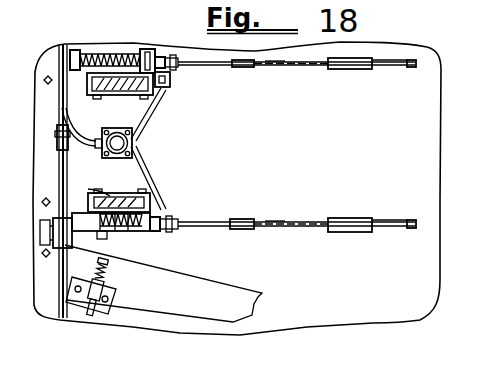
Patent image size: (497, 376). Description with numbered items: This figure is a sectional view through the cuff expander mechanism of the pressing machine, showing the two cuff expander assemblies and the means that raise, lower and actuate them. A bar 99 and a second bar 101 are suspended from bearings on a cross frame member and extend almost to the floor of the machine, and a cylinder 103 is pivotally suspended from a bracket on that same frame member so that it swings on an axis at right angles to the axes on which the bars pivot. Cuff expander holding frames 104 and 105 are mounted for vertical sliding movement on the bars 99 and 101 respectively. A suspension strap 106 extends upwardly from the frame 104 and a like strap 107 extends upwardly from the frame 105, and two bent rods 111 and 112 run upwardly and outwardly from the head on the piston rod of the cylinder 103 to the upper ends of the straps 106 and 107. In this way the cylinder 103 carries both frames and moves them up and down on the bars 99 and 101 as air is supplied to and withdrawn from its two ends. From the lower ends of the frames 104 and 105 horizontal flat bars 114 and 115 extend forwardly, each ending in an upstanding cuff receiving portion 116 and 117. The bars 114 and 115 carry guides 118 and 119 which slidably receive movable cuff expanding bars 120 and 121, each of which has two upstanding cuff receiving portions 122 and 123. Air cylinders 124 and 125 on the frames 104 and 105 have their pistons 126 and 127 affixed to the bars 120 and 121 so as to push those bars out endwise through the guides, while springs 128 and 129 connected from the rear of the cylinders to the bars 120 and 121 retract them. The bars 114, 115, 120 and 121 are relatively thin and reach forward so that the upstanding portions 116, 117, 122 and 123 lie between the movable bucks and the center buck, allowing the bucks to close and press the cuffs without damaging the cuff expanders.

The bar 99 is at (119, 92).
The second bar 101 is at (80, 146).
The cylinder 103 is at (116, 158).
The cuff expander holding frame 104 is at (95, 88).
The cuff expander holding frame 105 is at (89, 188).
The suspension strap 106 is at (168, 79).
The suspension strap 107 is at (163, 212).
The bent rod 111 is at (156, 107).
The bent rod 112 is at (148, 160).
The horizontal flat bar 114 is at (393, 66).
The horizontal flat bar 115 is at (383, 233).
The upstanding cuff receiving portion 116 is at (415, 68).
The upstanding cuff receiving portion 117 is at (410, 230).
The guide 118 is at (350, 70).
The guide 119 is at (247, 68).
The movable cuff expanding bar 120 is at (302, 66).
The movable cuff expanding bar 121 is at (308, 227).
The upstanding cuff receiving portion 122 is at (262, 62).
The upstanding cuff receiving portion 123 is at (287, 66).
The air cylinder 124 is at (107, 52).
The air cylinder 125 is at (145, 236).
The piston 126 is at (163, 52).
The piston 127 is at (165, 217).
The spring 128 is at (128, 50).
The spring 129 is at (163, 229).